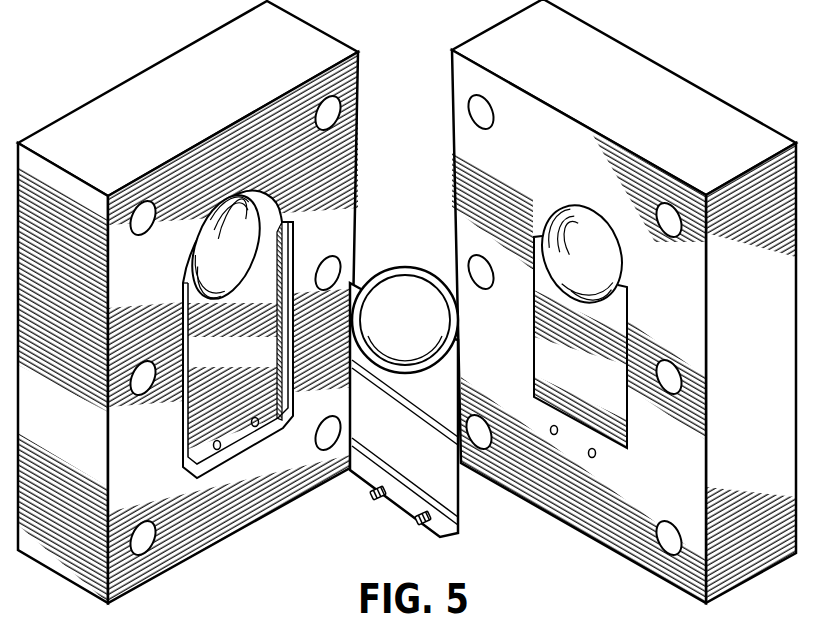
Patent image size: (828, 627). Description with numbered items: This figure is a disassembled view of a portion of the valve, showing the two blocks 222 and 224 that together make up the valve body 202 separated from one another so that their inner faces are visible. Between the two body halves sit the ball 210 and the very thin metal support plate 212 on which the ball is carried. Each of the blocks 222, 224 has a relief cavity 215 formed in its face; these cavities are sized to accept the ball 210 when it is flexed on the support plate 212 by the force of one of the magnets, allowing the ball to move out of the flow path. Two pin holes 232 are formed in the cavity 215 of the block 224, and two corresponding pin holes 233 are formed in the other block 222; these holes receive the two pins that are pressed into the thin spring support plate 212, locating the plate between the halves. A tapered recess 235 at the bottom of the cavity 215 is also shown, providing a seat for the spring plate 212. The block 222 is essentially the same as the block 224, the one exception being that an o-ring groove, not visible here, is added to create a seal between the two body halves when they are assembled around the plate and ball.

The valve body 202 is at (407, 301).
The block 224 is at (191, 115).
The block 222 is at (624, 105).
The relief cavity 215 is at (240, 265).
The ball 210 is at (417, 335).
The support plate 212 is at (418, 448).
The tapered recess 235 is at (183, 410).
The pin holes 232 is at (256, 428).
The pin holes 233 is at (553, 437).